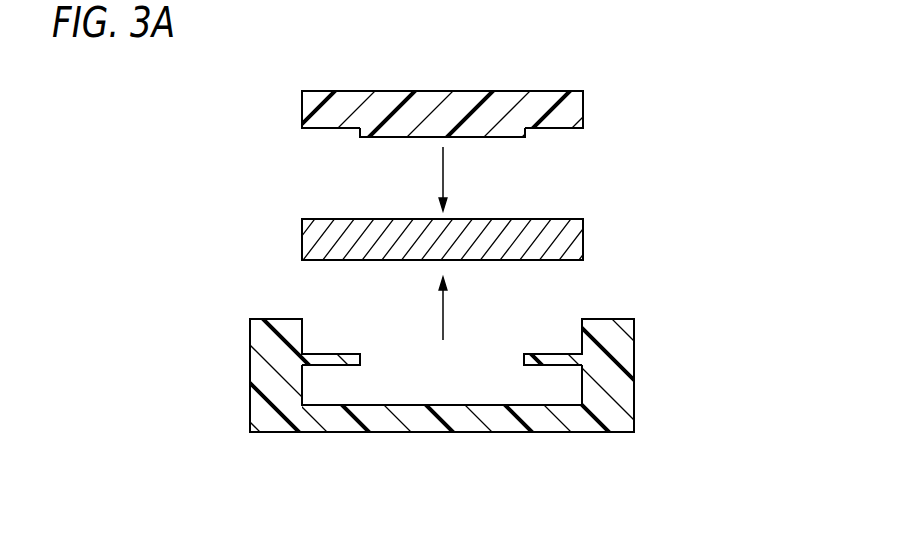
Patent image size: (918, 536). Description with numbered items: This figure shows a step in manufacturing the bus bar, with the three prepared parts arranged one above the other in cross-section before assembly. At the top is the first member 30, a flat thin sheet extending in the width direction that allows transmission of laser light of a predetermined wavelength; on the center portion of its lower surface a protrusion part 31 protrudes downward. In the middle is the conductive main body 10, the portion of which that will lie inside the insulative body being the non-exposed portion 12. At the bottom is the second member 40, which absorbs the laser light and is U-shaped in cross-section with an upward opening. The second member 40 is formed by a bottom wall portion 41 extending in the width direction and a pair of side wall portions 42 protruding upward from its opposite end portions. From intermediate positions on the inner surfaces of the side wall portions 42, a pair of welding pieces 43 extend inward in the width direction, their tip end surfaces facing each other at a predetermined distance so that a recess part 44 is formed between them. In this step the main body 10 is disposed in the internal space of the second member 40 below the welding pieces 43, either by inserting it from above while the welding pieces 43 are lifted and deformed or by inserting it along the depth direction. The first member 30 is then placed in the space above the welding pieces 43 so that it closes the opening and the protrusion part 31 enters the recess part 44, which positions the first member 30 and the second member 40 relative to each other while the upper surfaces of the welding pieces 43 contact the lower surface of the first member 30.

The first member 30 is at (505, 90).
The protrusion part 31 is at (442, 130).
The main body 10 is at (527, 239).
The non-exposed portion 12 is at (630, 240).
The second member 40 is at (448, 404).
The bottom wall portion 41 is at (462, 432).
The side wall portions 42 is at (250, 373).
The welding pieces 43 is at (329, 356).
The recess part 44 is at (411, 360).